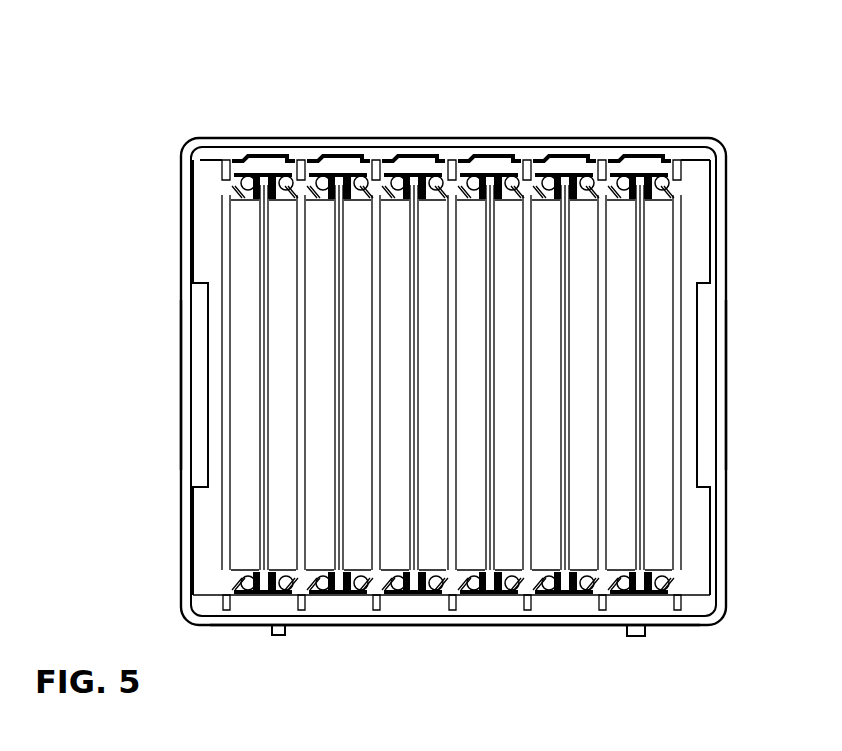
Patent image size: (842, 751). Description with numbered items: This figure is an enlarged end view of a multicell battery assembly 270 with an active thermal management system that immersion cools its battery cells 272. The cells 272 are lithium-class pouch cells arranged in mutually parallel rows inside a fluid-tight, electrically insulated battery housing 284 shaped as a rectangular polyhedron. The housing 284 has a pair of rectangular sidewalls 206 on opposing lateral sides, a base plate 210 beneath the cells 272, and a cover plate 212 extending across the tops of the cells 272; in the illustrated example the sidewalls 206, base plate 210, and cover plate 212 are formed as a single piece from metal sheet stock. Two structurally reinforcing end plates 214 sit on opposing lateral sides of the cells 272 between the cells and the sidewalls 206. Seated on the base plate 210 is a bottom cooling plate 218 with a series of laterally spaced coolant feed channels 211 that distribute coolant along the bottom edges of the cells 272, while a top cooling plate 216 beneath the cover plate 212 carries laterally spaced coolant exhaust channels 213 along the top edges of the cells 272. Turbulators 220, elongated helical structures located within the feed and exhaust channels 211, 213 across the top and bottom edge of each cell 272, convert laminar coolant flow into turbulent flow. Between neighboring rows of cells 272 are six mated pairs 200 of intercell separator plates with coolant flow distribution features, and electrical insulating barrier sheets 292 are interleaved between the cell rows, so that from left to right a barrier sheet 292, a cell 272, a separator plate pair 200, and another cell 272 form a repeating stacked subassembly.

The multicell battery assembly 270 is at (122, 46).
The battery housing 284 is at (174, 136).
The cover plate 212 is at (205, 153).
The top cooling plate 216 is at (676, 158).
The end plates 214 is at (192, 266).
The sidewalls 206 is at (185, 473).
The base plate 210 is at (192, 630).
The bottom cooling plate 218 is at (247, 603).
The coolant exhaust channels 213 is at (287, 157).
The battery cells 272 is at (305, 160).
The turbulators 220 is at (238, 186).
The coolant feed channels 211 is at (313, 610).
The electrical insulating barrier sheets 292 is at (668, 598).
The separator plate pairs 200 is at (255, 616).